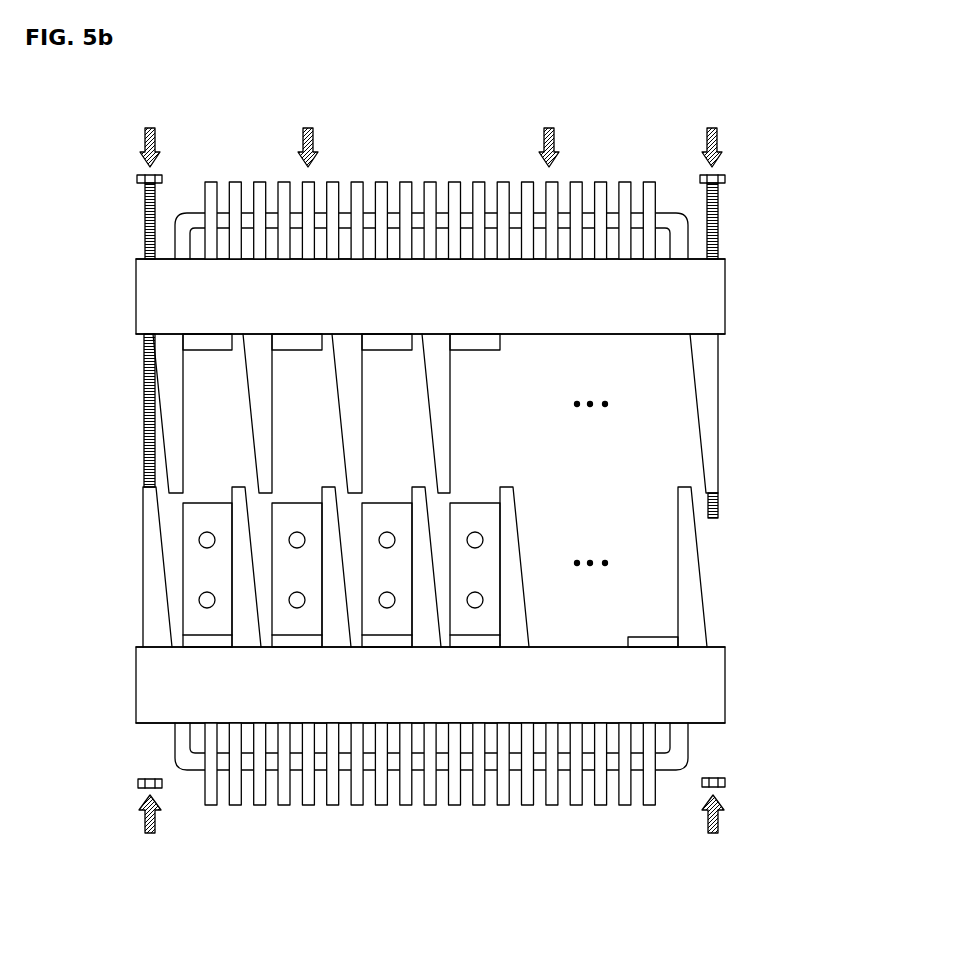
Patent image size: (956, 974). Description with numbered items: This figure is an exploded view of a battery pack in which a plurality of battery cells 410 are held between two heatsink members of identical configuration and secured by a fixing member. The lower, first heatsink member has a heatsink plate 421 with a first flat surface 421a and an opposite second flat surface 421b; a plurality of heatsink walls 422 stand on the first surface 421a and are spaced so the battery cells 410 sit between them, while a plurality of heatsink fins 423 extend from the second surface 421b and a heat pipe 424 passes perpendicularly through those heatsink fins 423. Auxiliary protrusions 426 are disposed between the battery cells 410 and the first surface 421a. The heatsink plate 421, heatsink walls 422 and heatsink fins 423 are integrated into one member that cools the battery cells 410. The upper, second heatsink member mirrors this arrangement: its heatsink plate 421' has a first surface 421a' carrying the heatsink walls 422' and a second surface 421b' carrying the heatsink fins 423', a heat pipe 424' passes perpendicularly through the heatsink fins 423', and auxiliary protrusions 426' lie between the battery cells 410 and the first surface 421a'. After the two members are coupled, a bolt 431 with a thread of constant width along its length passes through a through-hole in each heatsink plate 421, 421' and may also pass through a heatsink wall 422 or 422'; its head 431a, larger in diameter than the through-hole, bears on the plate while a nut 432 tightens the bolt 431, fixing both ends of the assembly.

The battery cell 410 is at (190, 571).
The heatsink plate 421 is at (390, 685).
The first surface 421a is at (390, 638).
The second surface 421b is at (390, 728).
The heatsink plate 421' is at (386, 296).
The first surface 421a' is at (386, 337).
The second surface 421b' is at (386, 252).
The heatsink wall 422 is at (460, 567).
The heatsink wall 422' is at (473, 413).
The heatsink fin 423 is at (430, 792).
The heatsink fin 423' is at (430, 194).
The heat pipe 424 is at (430, 792).
The heat pipe 424' is at (431, 194).
The auxiliary protrusion 426 is at (646, 613).
The auxiliary protrusion 426' is at (358, 374).
The bolt 431 is at (718, 200).
The head 431a is at (727, 179).
The nut 432 is at (727, 782).